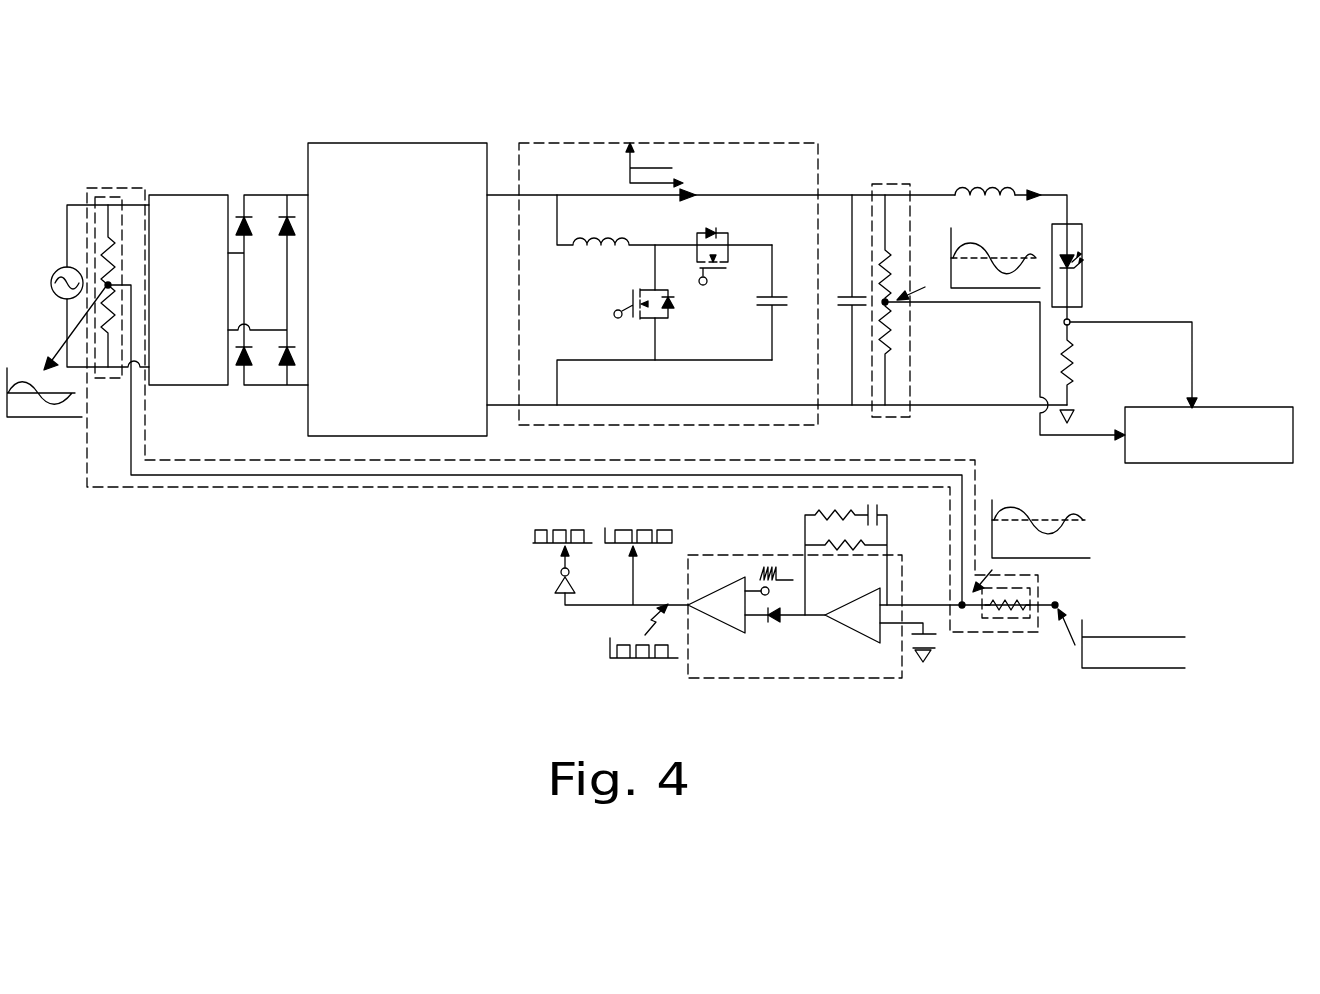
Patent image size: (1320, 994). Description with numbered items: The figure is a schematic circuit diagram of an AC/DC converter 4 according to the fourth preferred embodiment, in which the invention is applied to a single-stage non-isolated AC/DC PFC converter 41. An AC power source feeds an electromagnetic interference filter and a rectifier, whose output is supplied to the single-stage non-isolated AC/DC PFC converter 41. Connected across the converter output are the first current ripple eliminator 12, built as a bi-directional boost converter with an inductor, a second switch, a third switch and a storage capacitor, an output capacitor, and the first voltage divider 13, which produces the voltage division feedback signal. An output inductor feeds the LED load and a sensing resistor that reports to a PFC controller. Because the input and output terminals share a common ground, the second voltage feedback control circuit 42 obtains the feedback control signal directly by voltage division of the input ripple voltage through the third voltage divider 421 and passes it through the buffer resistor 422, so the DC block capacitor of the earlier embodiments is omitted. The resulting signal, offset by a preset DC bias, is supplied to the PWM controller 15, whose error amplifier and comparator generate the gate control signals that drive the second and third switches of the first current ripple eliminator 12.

The AC/DC converter 4 is at (1143, 92).
The single-stage non-isolated AC/DC PFC converter 41 is at (397, 143).
The second voltage feedback control circuit 42 is at (135, 188).
The third voltage divider 421 is at (100, 188).
The buffer resistor 422 is at (1012, 618).
The first current ripple eliminator 12 is at (597, 143).
The first voltage divider 13 is at (900, 184).
The PWM controller 15 is at (878, 678).